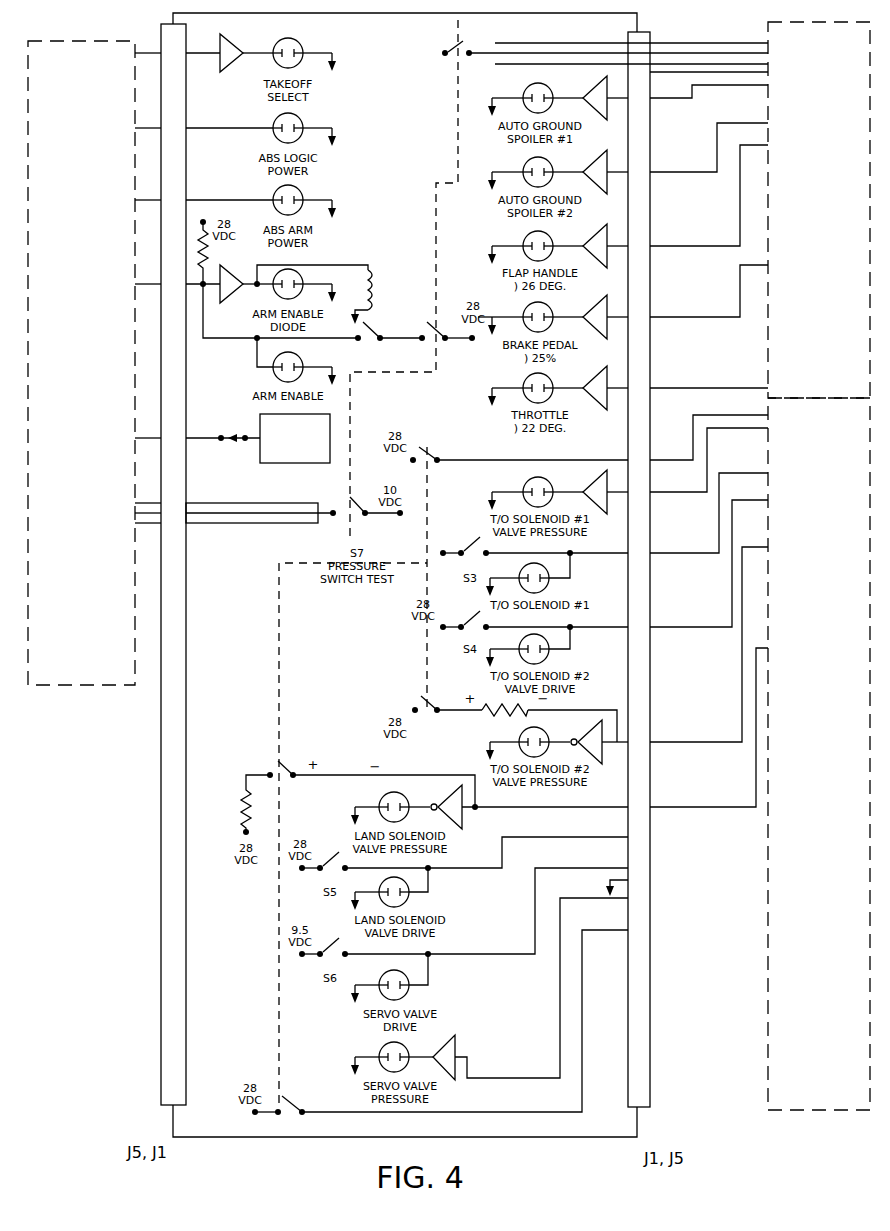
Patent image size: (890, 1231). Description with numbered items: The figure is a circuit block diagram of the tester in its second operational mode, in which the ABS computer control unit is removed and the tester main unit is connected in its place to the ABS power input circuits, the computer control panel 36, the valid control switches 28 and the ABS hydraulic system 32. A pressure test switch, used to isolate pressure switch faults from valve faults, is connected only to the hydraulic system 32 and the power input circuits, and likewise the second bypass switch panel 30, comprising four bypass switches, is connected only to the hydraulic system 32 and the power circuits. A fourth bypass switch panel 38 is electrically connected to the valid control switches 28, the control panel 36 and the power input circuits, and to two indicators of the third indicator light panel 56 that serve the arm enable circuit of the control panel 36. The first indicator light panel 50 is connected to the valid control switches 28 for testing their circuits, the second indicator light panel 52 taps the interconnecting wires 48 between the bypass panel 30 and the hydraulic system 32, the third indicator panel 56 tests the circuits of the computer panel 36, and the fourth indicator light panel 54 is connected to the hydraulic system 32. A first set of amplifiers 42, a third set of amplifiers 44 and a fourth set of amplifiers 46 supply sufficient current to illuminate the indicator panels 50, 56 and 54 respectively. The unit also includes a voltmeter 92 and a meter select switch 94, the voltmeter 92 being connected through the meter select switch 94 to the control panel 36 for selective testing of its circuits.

The valid control switches 28 is at (800, 103).
The second bypass switch panel 30 is at (484, 546).
The ABS hydraulic system 32 is at (806, 576).
The computer control panel 36 is at (70, 179).
The fourth bypass switch panel 38 is at (470, 46).
The first set of amplifiers 42 is at (607, 165).
The third set of amplifiers 44 is at (233, 72).
The fourth set of amplifiers 46 is at (607, 490).
The interconnecting wires 48 is at (584, 490).
The first indicator light panel 50 is at (545, 83).
The second indicator light panel 52 is at (548, 590).
The fourth indicator light panel 54 is at (524, 486).
The third indicator light panel 56 is at (298, 42).
The voltmeter 92 is at (318, 465).
The meter select switch 94 is at (213, 450).